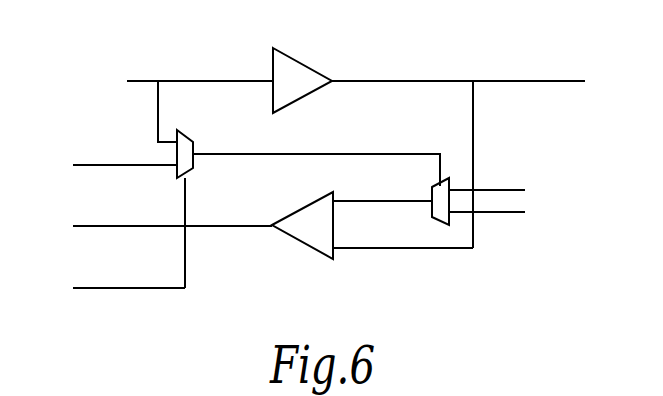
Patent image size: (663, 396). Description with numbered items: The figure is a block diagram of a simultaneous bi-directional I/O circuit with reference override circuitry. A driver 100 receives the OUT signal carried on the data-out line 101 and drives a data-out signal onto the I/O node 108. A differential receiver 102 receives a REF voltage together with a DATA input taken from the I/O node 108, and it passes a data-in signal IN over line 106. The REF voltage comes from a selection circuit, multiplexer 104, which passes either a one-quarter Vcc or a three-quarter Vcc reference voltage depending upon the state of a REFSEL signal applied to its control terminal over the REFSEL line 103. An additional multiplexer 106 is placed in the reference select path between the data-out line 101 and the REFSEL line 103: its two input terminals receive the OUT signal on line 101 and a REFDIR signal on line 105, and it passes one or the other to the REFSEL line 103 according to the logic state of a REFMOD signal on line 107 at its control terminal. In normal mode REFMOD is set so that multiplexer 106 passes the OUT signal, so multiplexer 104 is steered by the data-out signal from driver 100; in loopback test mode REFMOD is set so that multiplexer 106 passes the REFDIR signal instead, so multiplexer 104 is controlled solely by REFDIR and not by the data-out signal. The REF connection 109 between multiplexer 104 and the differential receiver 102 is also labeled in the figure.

The driver 100 is at (293, 58).
The data-out line (OUT) 101 is at (132, 82).
The differential receiver 102 is at (305, 207).
The REFSEL line 103 is at (387, 153).
The multiplexer (MUX) 104 is at (438, 227).
The REFDIR line 105 is at (75, 167).
The multiplexer (MUX) / line IN 106 is at (177, 140).
The REFMOD line 107 is at (75, 290).
The I/O node 108 is at (487, 81).
The REF reference line 109 is at (413, 198).